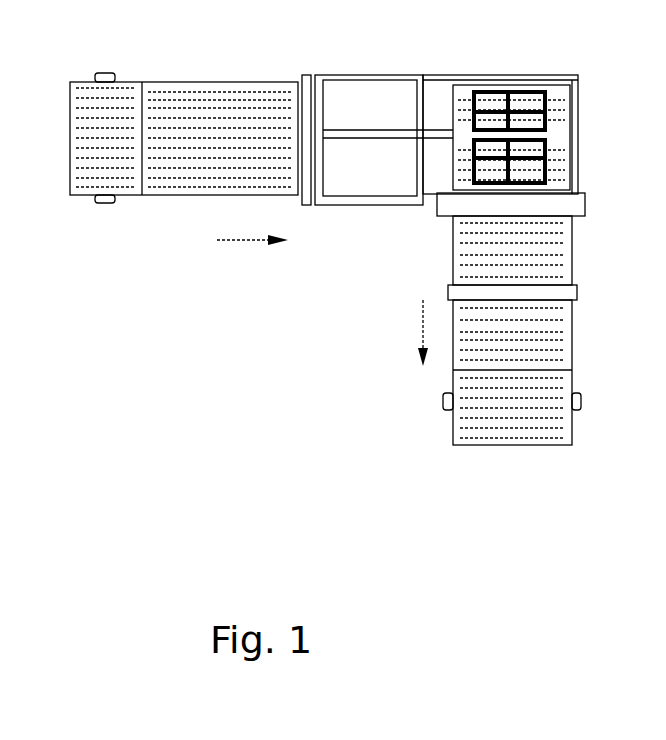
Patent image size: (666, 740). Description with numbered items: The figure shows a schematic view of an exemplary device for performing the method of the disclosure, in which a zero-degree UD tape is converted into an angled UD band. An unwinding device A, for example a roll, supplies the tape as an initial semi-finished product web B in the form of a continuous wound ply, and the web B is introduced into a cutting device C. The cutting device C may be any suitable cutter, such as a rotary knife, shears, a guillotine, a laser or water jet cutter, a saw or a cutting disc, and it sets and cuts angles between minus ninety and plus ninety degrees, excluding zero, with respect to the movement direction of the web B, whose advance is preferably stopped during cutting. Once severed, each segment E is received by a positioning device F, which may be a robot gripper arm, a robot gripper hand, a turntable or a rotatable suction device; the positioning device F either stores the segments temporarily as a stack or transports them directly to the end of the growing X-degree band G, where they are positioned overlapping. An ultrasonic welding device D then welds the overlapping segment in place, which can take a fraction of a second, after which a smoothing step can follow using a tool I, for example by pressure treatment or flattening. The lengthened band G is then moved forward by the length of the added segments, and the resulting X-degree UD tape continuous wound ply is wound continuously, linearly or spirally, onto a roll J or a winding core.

The unwinding device A is at (96, 203).
The initial semi-finished product web B is at (88, 97).
The cutting device C is at (302, 75).
The ultrasonic welding device D is at (575, 207).
The segment E is at (560, 137).
The positioning device F is at (482, 88).
The X° band G is at (560, 252).
The tool I is at (578, 297).
The roll J is at (581, 400).